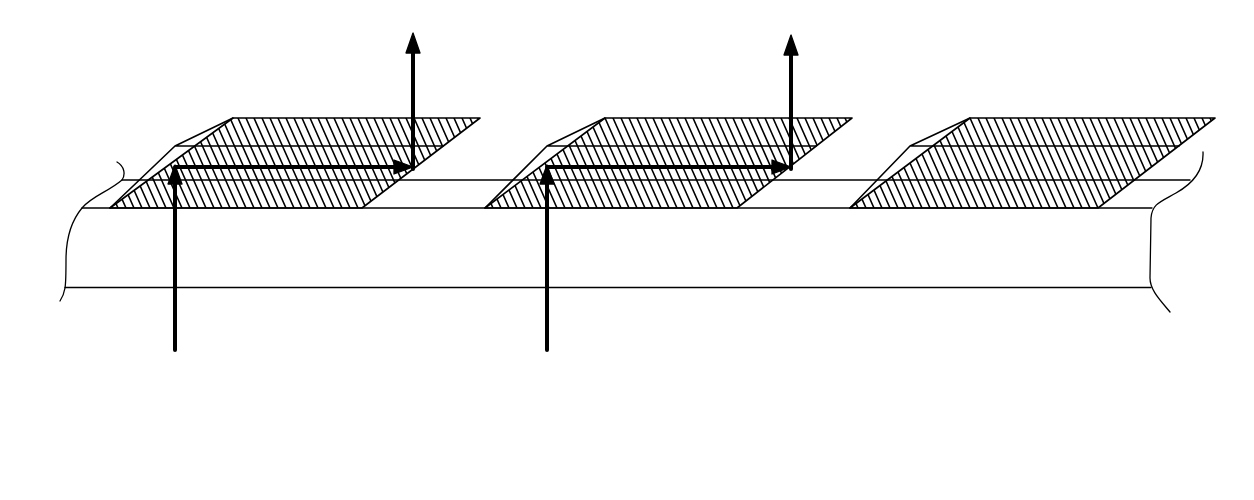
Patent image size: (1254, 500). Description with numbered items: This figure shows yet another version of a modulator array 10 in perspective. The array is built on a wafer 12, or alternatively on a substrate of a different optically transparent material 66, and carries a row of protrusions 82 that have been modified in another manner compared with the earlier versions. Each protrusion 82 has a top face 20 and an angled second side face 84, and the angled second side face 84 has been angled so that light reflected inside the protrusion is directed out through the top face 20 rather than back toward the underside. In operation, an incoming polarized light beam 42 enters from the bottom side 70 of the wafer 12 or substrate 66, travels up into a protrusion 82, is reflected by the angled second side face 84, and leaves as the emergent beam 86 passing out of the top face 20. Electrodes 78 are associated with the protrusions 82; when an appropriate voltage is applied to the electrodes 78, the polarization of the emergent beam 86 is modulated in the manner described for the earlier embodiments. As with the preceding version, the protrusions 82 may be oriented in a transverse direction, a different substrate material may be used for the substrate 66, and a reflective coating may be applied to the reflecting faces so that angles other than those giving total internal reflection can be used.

The modulator array 10 is at (1052, 80).
The wafer 12 is at (631, 278).
The substrate of different optically transparent material 66 is at (1067, 255).
The top face 20 is at (682, 118).
The incoming polarized light beam 42 is at (177, 322).
The bottom side 70 is at (920, 295).
The electrodes 78 is at (1030, 150).
The protrusions 82 is at (1030, 150).
The angled second side face 84 is at (1159, 176).
The emergent beam 86 is at (414, 75).